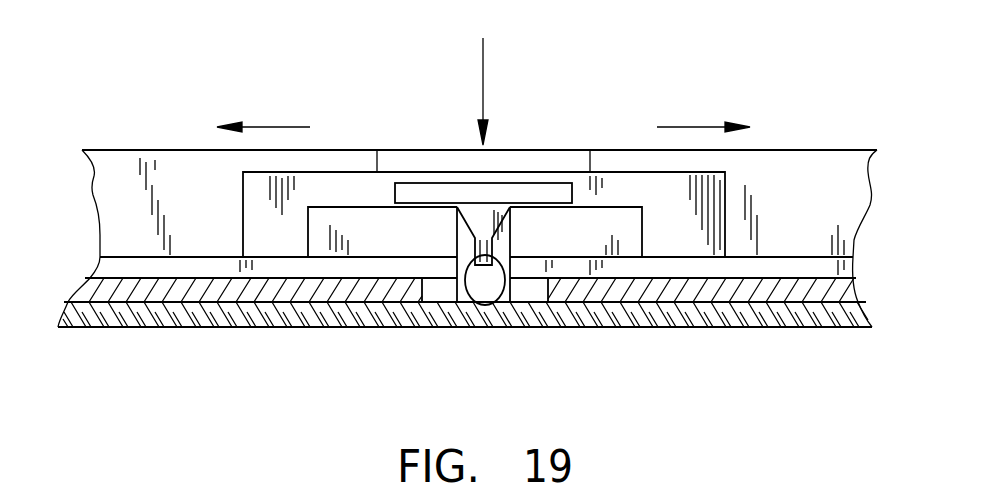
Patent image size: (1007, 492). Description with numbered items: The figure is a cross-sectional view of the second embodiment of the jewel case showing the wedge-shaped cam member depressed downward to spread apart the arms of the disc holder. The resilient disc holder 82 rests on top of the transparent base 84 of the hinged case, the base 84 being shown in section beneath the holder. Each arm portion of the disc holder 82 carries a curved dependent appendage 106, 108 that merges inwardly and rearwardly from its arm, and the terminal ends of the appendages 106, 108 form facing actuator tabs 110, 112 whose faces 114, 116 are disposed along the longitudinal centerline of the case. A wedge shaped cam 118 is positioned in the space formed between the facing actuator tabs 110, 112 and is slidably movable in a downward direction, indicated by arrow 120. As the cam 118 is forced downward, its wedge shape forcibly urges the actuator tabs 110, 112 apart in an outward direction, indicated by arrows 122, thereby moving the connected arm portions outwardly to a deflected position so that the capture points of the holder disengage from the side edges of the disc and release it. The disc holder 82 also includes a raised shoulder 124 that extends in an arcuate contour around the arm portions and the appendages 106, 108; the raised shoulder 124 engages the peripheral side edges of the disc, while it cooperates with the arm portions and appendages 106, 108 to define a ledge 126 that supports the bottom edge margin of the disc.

The resilient disc holder 82 is at (772, 150).
The transparent base 84 is at (808, 328).
The curved dependent appendage 106 is at (150, 257).
The curved dependent appendage 108 is at (792, 257).
The actuator tab 110 is at (352, 227).
The actuator tab 112 is at (610, 215).
The face of actuator tab 114 is at (478, 303).
The face of actuator tab 116 is at (497, 303).
The wedge shaped cam 118 is at (519, 183).
The downward direction arrow 120 is at (482, 80).
The outward direction arrows 122 is at (275, 127).
The raised shoulder 124 is at (192, 272).
The ledge 126 is at (327, 302).